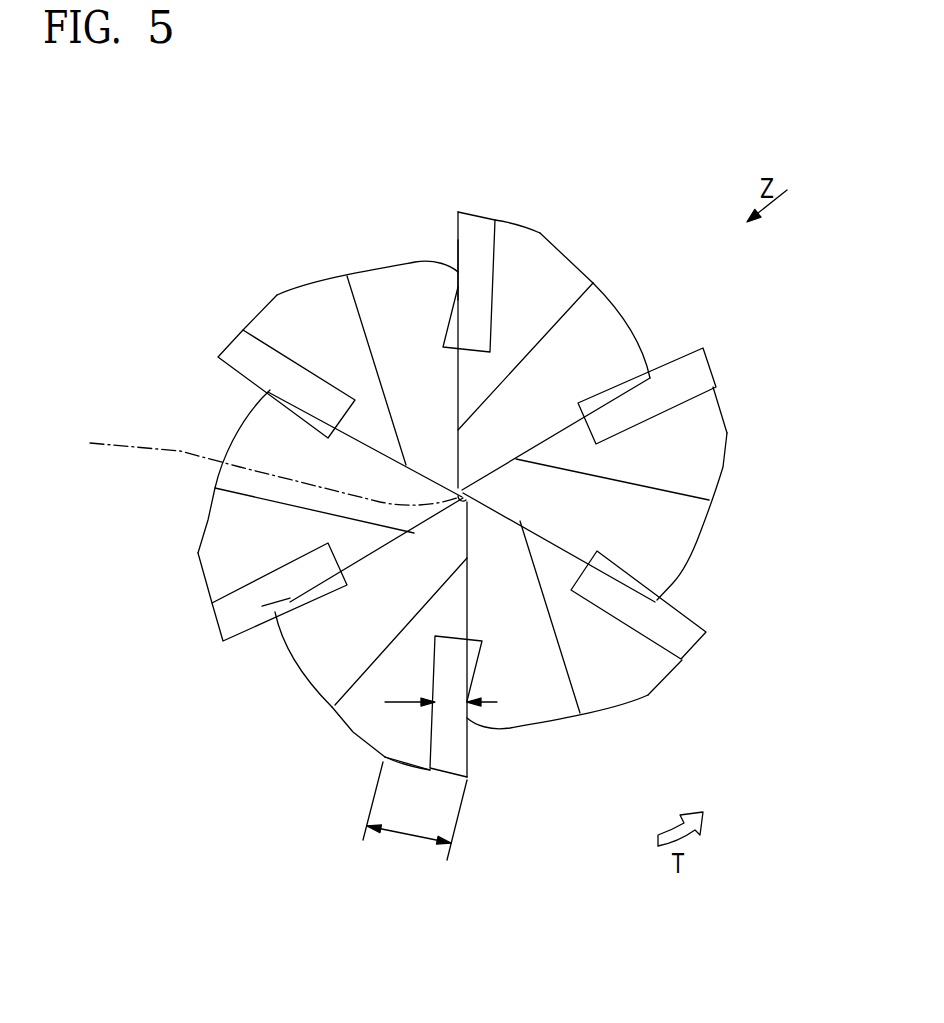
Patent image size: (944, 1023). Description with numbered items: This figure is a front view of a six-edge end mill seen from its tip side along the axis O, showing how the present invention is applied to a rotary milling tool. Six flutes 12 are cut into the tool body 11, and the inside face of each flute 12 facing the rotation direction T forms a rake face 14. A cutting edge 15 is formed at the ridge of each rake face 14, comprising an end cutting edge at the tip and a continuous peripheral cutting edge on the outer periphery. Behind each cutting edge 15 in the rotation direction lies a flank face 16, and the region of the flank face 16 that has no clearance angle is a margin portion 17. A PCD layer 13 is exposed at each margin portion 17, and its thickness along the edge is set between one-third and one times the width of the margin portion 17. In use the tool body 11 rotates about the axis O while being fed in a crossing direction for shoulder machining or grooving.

The tool body 11 is at (453, 486).
The flute 12 is at (363, 252).
The PCD layer 13 is at (477, 245).
The rake face 14 is at (432, 244).
The cutting edge 15 is at (458, 238).
The flank face 16 is at (575, 258).
The margin portion 17 is at (522, 223).
The axis O is at (261, 466).